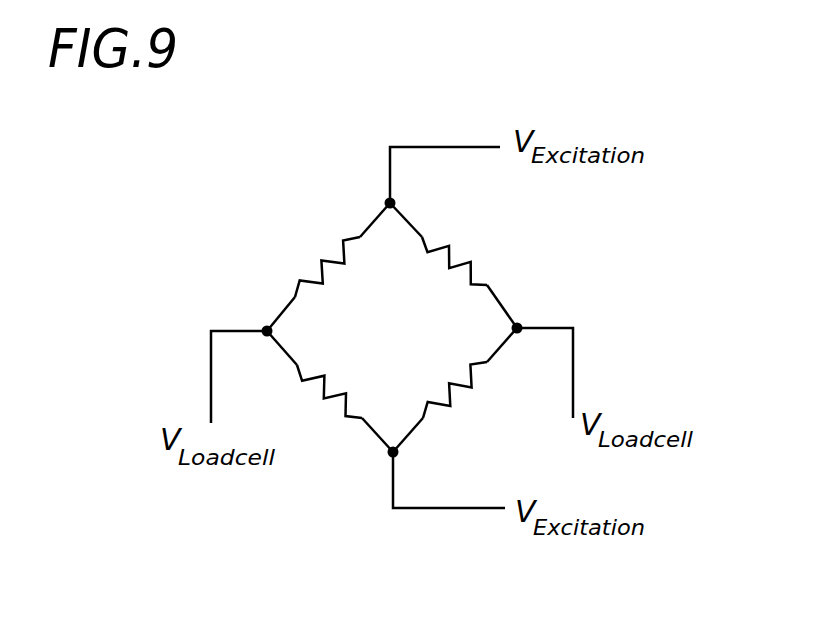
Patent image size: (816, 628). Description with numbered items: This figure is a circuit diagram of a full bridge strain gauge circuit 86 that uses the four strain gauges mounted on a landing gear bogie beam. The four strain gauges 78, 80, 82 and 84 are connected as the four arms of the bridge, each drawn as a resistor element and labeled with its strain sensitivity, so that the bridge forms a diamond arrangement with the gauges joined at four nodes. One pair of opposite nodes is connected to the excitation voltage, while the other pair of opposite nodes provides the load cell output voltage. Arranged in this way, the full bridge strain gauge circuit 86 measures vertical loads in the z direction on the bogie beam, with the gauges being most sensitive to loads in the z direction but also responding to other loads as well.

The strain gauge 78 is at (462, 392).
The strain gauge 80 is at (490, 283).
The strain gauge 82 is at (313, 268).
The strain gauge 84 is at (318, 395).
The full bridge strain gauge circuit 86 is at (350, 188).